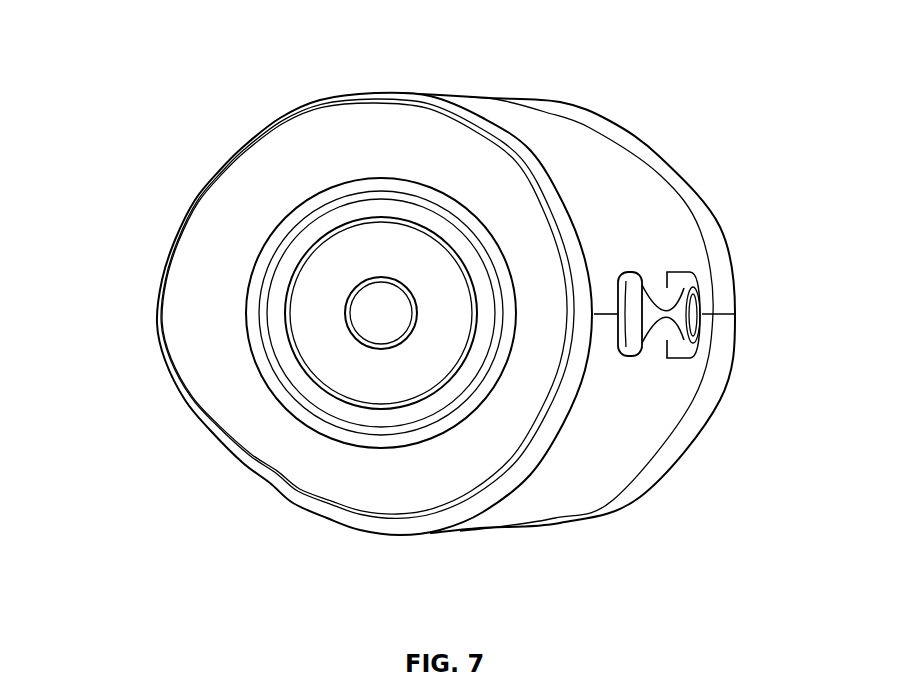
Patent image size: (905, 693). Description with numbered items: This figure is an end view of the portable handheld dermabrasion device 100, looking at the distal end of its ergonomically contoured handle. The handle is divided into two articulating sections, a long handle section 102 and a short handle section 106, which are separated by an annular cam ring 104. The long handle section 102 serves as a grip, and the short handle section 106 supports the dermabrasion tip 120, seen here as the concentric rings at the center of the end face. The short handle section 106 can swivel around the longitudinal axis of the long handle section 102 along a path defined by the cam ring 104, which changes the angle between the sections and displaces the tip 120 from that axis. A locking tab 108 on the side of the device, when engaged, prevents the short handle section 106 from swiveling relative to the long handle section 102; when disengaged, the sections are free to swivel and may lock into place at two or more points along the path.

The portable handheld dermabrasion device 100 is at (132, 57).
The long handle section 102 is at (587, 483).
The annular cam ring 104 is at (397, 527).
The short handle section 106 is at (328, 488).
The locking tab 108 is at (683, 283).
The tip 120 is at (312, 233).